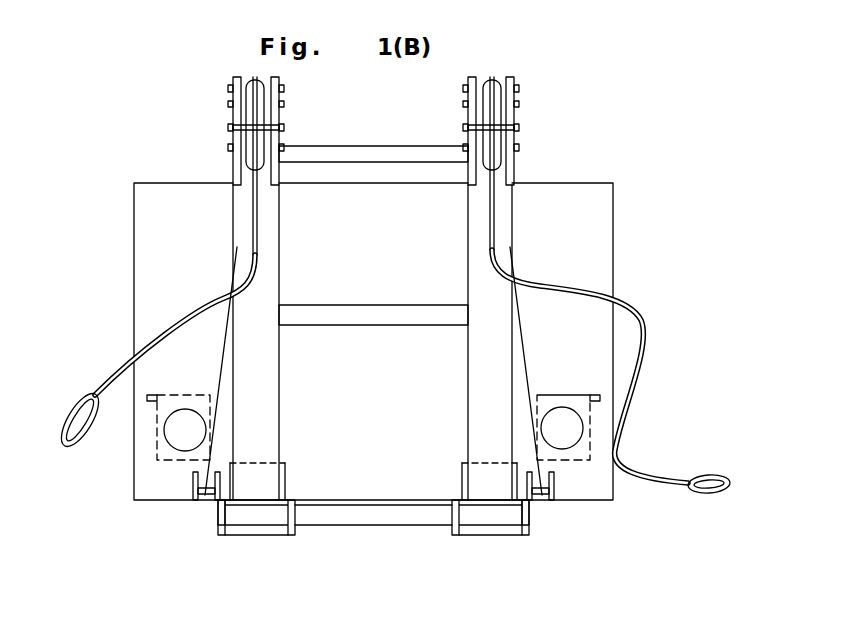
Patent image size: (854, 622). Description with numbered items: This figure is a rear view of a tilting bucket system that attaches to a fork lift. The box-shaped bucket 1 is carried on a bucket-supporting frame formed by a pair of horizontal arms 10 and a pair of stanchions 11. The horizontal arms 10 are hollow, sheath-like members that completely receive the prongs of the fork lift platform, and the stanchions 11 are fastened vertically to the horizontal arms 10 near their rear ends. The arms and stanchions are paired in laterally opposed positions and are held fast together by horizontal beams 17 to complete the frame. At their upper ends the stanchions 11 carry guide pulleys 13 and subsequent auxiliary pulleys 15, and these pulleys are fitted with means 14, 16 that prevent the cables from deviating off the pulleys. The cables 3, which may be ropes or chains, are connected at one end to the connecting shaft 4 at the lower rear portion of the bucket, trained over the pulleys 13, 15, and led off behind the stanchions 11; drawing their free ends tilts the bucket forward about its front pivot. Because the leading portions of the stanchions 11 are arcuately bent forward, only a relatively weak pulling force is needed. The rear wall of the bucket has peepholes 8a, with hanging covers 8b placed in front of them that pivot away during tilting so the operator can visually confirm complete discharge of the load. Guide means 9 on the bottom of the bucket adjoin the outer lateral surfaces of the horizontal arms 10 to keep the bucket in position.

The bucket 1 is at (147, 241).
The cables 3 is at (113, 370).
The connecting shaft 4 is at (197, 487).
The peepholes 8a is at (163, 443).
The hanging covers 8b is at (157, 407).
The guide means 9 is at (217, 513).
The horizontal arms 10 is at (268, 535).
The stanchions 11 is at (271, 374).
The guide pulleys 13 is at (264, 108).
The cable-retaining means 14 is at (232, 90).
The auxiliary pulleys 15 is at (250, 158).
The cable-retaining means 16 is at (232, 130).
The horizontal beams 17 is at (359, 156).